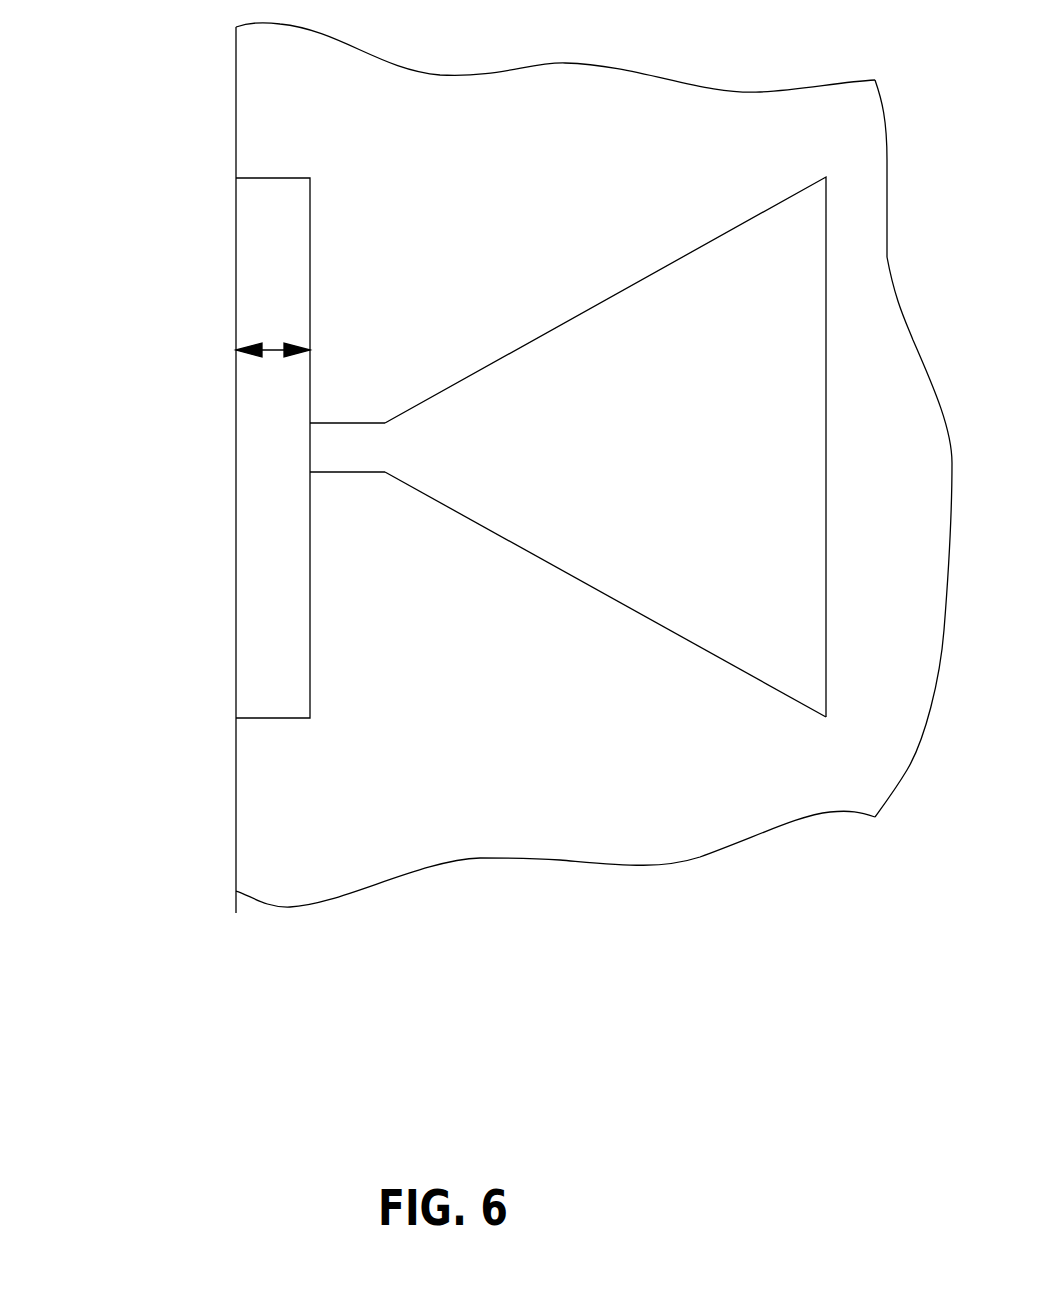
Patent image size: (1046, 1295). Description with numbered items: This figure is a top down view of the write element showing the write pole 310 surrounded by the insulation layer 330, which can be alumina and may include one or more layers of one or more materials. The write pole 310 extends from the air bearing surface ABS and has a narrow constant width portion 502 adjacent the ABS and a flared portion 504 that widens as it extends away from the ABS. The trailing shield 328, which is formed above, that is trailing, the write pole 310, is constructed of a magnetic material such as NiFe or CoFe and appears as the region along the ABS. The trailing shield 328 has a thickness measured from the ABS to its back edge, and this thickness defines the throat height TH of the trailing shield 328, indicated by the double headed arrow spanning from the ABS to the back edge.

The insulation layer 330 is at (522, 152).
The trailing magnetic shield 328 is at (273, 238).
The write pole 310 is at (727, 424).
The narrow constant width portion 502 is at (347, 495).
The flared portion 504 is at (650, 618).
The air bearing surface ABS is at (236, 275).
The throat height TH is at (273, 345).